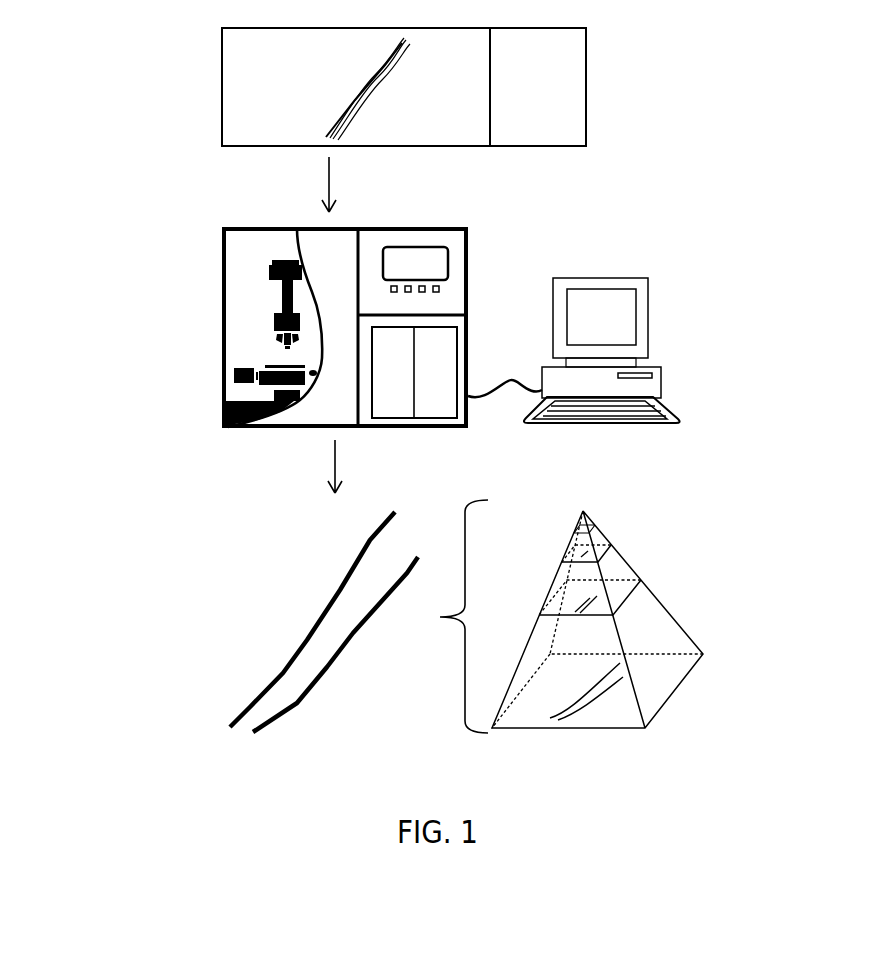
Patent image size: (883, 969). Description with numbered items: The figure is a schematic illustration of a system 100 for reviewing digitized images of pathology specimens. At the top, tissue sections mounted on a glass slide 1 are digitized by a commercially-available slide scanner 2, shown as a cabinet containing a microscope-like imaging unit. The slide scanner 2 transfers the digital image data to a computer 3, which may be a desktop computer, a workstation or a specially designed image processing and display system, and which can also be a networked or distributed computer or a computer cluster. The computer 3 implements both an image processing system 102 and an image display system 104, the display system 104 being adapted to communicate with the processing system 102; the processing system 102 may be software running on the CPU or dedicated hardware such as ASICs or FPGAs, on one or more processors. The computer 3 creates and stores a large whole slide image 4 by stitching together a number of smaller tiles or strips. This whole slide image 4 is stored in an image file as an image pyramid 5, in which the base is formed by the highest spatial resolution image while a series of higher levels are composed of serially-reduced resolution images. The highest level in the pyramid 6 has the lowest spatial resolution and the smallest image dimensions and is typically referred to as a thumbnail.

The system for reviewing digitized images of pathology specimens 100 is at (767, 206).
The glass slide 1 is at (586, 42).
The slide scanner 2 is at (222, 242).
The computer 3 is at (638, 318).
The image display system 104 is at (580, 290).
The image processing system 102 is at (665, 366).
The whole slide image 4 is at (222, 520).
The image pyramid 5 is at (615, 619).
The highest level in the pyramid 6 is at (603, 523).